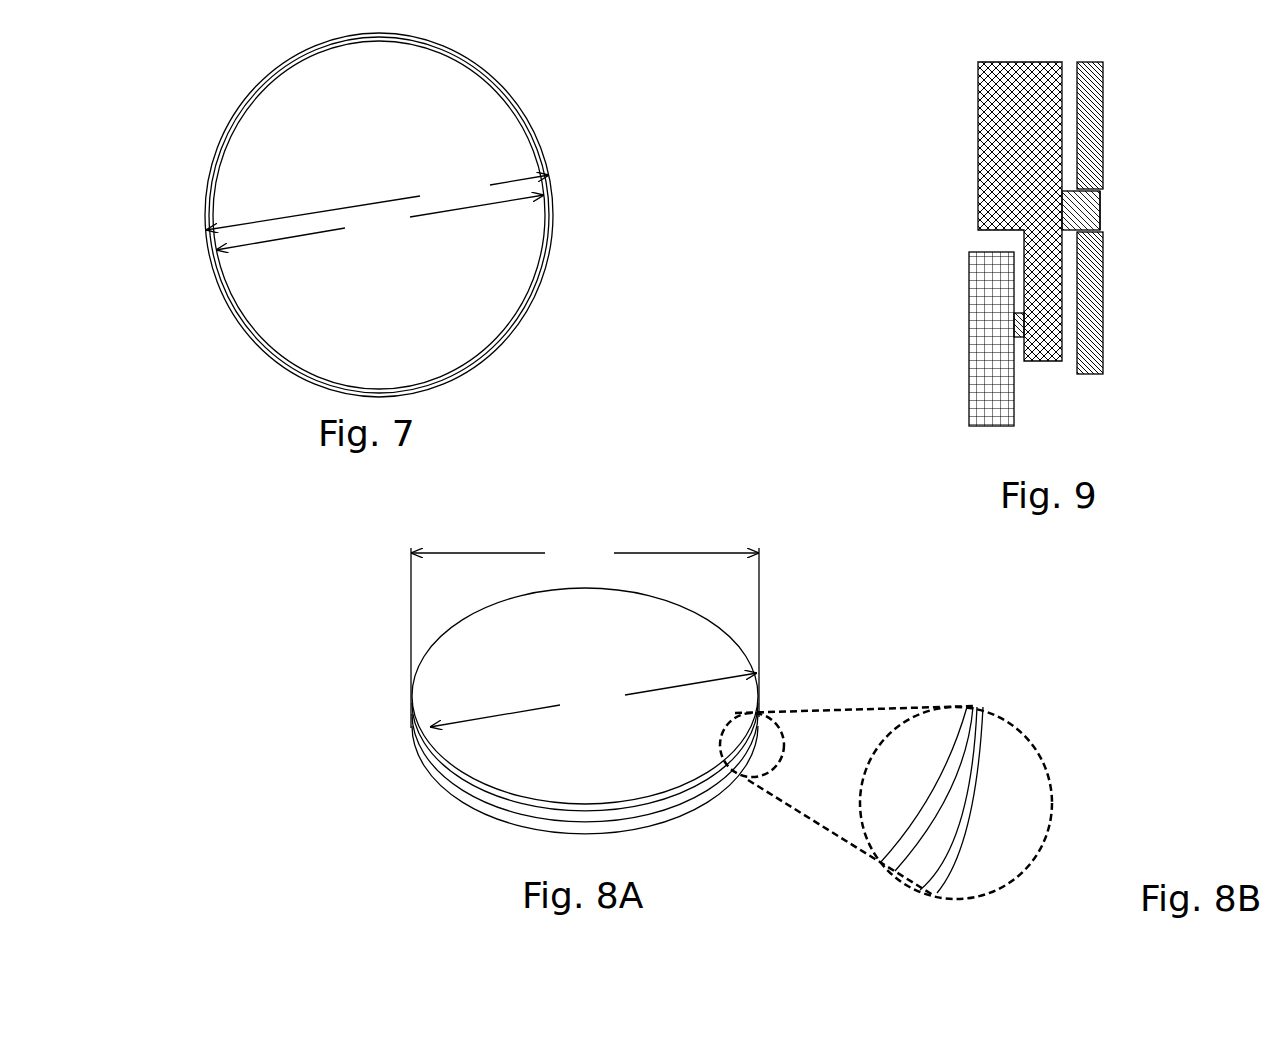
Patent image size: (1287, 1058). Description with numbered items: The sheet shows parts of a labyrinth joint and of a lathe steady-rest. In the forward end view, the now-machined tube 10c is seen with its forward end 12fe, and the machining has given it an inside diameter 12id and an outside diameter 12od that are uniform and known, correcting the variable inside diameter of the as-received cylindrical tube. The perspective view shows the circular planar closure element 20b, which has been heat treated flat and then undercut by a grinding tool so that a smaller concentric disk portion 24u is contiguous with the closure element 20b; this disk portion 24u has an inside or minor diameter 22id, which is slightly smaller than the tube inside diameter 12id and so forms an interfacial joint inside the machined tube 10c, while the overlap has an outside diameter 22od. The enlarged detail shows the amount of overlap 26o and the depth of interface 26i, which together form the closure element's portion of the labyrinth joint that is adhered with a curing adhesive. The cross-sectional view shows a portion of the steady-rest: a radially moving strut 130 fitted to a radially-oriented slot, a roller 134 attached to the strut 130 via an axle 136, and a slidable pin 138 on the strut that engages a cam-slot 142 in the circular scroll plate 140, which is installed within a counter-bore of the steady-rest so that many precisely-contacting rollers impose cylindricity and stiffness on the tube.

In FIG. 7, the now-machined tube 10c is at (565, 63).
In FIG. 7, the ring front edge 12fe is at (550, 177).
In FIG. 7, the outside diameter 12od is at (377, 199).
In FIG. 7, the inside diameter 12id is at (380, 222).
In FIG. 8A, the circular planar closure element 20b is at (367, 658).
In FIG. 8A, the outside diameter 22od is at (585, 633).
In FIG. 8A, the inside diameter 22id is at (593, 700).
In FIG. 8A, the smaller concentric disk portion 24u is at (605, 654).
In FIG. 8B, the interface 26i is at (908, 832).
In FIG. 8B, the overlap 26o is at (947, 810).
In FIG. 9, the strut 130 is at (978, 145).
In FIG. 9, the roller 134 is at (970, 317).
In FIG. 9, the axle 136 is at (1018, 343).
In FIG. 9, the slidable pin 138 is at (1080, 208).
In FIG. 9, the scroll plate 140 is at (1090, 140).
In FIG. 9, the cam-slot 142 is at (1104, 197).